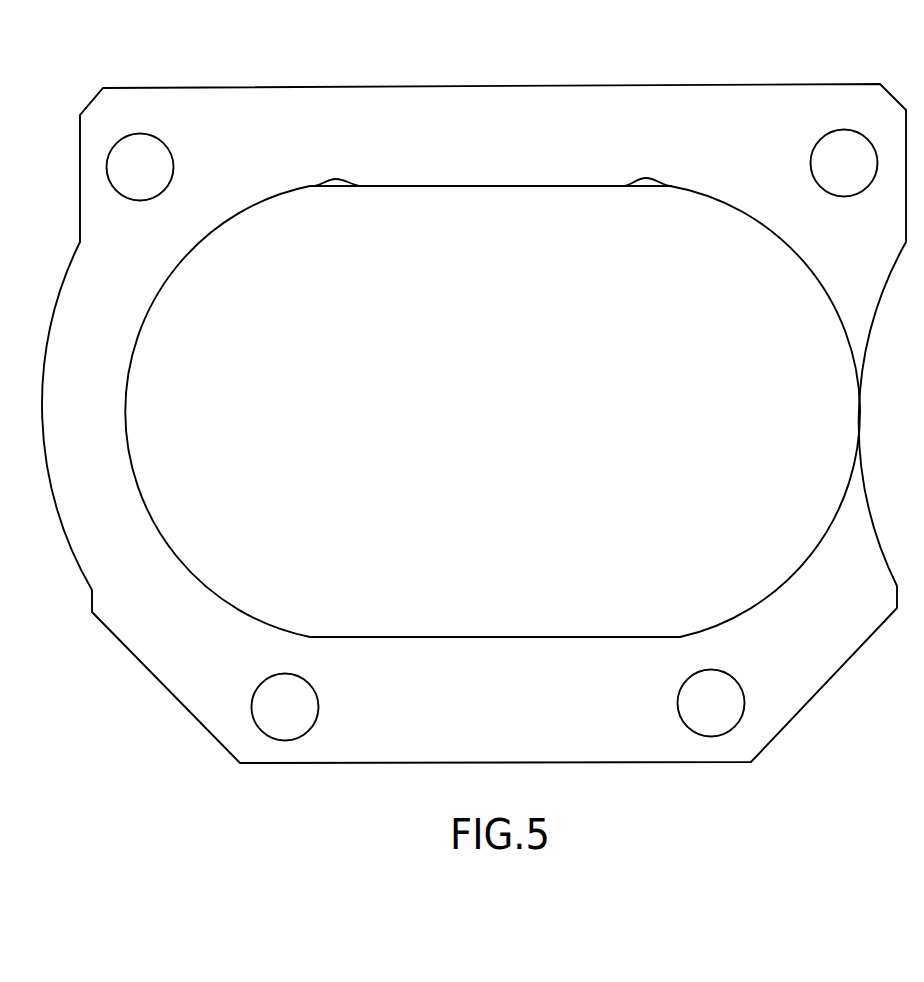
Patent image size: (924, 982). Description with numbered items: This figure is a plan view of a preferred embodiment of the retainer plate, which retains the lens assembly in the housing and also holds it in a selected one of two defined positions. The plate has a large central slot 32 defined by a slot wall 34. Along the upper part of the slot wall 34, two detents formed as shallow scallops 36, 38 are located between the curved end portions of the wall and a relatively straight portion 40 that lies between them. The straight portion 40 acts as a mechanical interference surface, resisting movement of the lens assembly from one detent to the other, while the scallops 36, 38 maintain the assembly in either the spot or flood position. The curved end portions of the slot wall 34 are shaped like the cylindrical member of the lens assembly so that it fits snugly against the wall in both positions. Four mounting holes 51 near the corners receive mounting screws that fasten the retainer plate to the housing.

The slot 32 is at (762, 515).
The slot wall 34 is at (661, 635).
The detent 36 is at (336, 180).
The detent 38 is at (646, 178).
The straight portion 40 is at (483, 187).
The mounting hole 51 is at (745, 703).